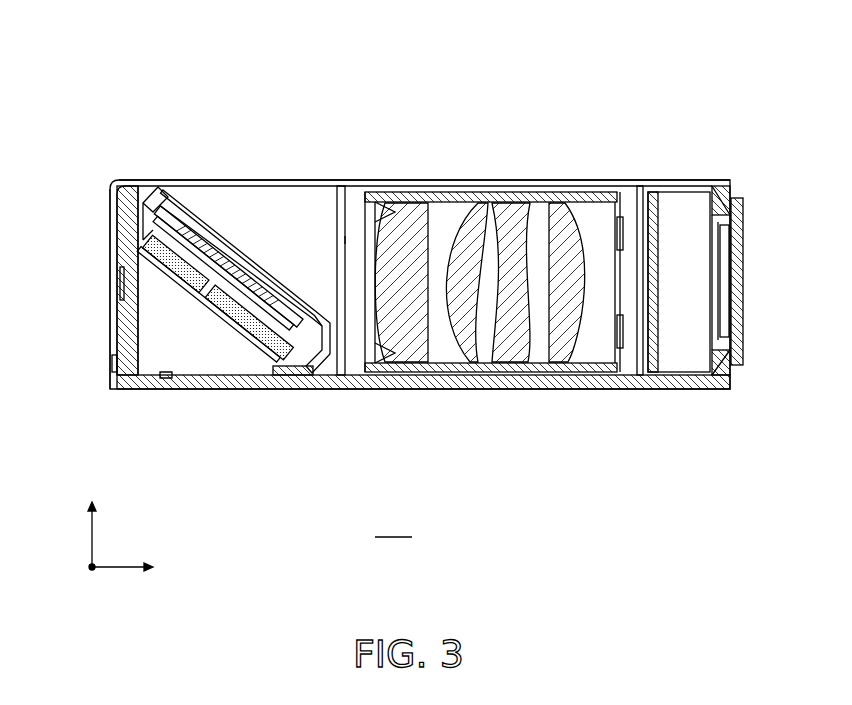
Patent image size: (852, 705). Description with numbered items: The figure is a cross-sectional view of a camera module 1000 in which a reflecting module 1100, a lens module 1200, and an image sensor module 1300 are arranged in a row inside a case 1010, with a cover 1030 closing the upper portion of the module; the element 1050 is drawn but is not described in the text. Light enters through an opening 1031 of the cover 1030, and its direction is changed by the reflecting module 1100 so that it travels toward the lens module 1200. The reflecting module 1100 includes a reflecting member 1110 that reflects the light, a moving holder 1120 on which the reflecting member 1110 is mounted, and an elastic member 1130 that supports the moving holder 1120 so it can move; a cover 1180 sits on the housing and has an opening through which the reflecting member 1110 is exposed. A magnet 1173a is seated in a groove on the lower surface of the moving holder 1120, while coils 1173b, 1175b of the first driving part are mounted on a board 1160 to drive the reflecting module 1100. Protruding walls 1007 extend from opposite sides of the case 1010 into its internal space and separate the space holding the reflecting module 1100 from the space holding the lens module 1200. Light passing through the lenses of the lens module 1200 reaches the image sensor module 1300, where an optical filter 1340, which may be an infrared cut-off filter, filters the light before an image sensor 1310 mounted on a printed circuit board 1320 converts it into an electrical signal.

The camera module 1000 is at (226, 34).
The case 1010 is at (118, 213).
The housing side wall 1050 is at (112, 258).
The board 1160 is at (119, 300).
The magnet 1173a is at (162, 180).
The coil 1173b is at (112, 366).
The coil 1175b is at (166, 374).
The reflecting module 1100 is at (251, 302).
The reflecting member 1110 is at (300, 378).
The moving holder 1120 is at (258, 363).
The elastic member 1130 is at (290, 372).
The cover 1180 is at (318, 387).
The opening 1031 is at (298, 180).
The protruding walls 1007 is at (346, 240).
The cover 1030 is at (512, 186).
The lens module 1200 is at (452, 198).
The image sensor module 1300 is at (735, 244).
The image sensor 1310 is at (726, 283).
The printed circuit board 1320 is at (743, 236).
The optical filter 1340 is at (655, 322).